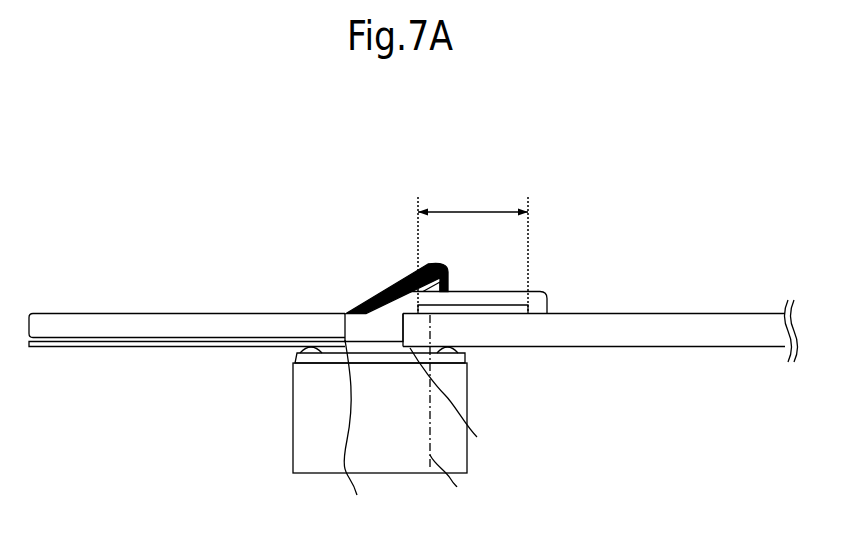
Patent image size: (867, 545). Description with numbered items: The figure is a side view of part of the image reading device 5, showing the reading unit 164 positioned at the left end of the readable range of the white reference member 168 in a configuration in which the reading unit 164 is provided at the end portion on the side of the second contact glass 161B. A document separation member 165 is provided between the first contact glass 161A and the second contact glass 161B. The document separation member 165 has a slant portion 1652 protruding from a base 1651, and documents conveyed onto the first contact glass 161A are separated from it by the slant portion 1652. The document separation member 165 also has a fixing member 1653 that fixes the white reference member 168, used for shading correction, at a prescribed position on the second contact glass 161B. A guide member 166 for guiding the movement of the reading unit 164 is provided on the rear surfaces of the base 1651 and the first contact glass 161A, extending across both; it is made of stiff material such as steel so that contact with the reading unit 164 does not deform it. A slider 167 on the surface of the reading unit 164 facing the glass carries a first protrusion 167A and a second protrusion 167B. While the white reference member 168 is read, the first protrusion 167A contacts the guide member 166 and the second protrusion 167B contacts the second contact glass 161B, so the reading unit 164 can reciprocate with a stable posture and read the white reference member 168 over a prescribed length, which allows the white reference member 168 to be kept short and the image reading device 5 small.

The image reading device 5 is at (561, 186).
The first contact glass 161A is at (78, 317).
The second contact glass 161B is at (640, 318).
The reading unit 164 is at (300, 457).
The document separation member 165 is at (432, 282).
The base 1651 is at (343, 315).
The slant portion 1652 is at (413, 277).
The fixing member 1653 is at (542, 293).
The guide member 166 is at (72, 346).
The slider 167 is at (368, 381).
The first protrusion 167A is at (338, 343).
The second protrusion 167B is at (414, 347).
The white reference member 168 is at (495, 308).